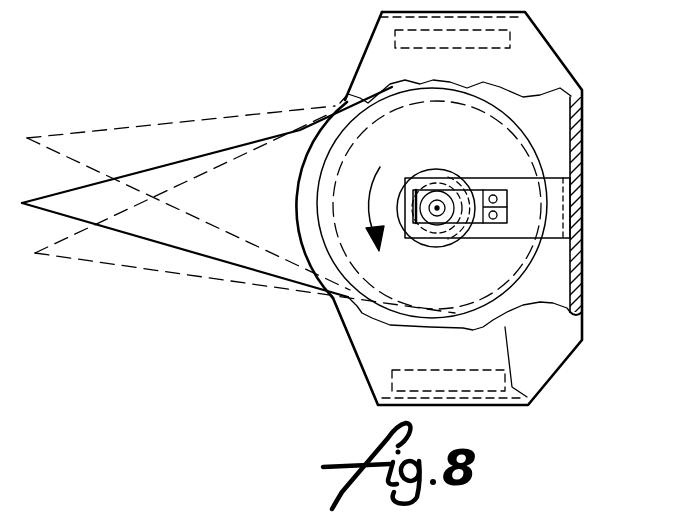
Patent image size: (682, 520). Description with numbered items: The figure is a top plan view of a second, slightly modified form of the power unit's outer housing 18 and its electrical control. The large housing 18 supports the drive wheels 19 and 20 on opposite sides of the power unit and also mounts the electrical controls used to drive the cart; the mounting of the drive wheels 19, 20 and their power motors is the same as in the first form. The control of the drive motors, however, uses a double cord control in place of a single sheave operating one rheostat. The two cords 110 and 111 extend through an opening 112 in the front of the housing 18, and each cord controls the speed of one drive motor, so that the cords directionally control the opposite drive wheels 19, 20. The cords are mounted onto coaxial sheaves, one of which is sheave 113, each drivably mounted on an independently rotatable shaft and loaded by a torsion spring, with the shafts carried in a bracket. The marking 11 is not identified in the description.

The housing 18 is at (583, 160).
The lower mounting block 19 is at (533, 396).
The upper mounting block 20 is at (517, 42).
The upper beam edge 110 is at (197, 158).
The lower beam edge 111 is at (222, 259).
The housing corner 112 is at (337, 310).
The rotating disk 113 is at (483, 147).
The housing wall portion 11 is at (539, 357).